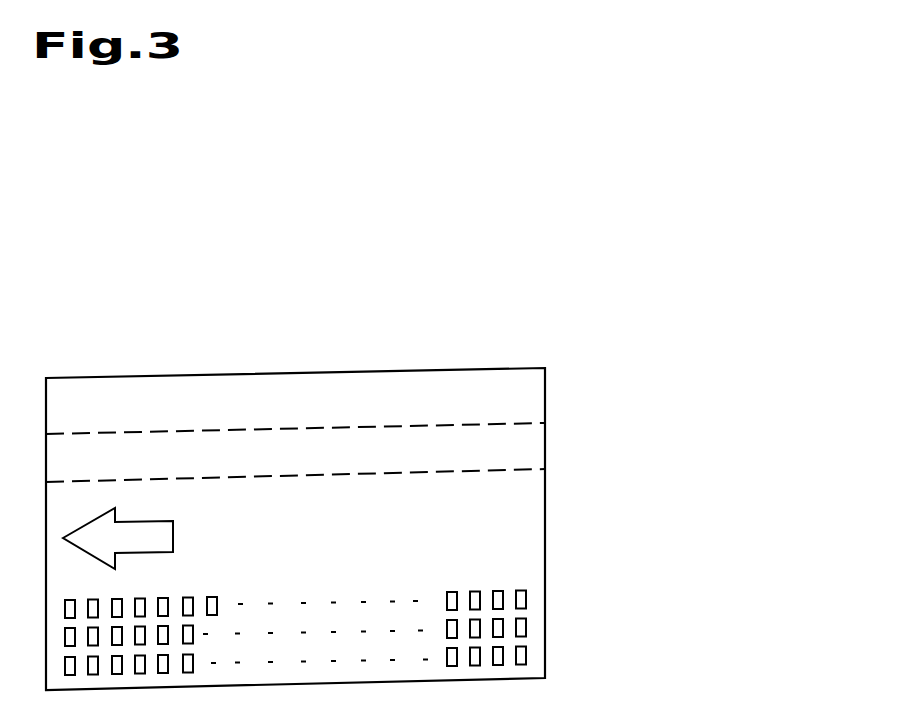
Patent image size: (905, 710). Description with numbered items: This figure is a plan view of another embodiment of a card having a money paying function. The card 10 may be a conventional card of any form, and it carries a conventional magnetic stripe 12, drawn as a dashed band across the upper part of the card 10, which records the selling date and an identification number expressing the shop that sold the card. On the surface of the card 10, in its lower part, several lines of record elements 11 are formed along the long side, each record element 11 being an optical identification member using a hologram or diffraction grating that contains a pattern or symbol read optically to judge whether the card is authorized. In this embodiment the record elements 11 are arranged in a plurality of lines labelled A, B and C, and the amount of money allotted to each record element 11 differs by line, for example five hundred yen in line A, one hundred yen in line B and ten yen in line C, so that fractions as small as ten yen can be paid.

The card 10 is at (105, 376).
The record element 11 is at (526, 600).
The magnetic stripe 12 is at (290, 428).